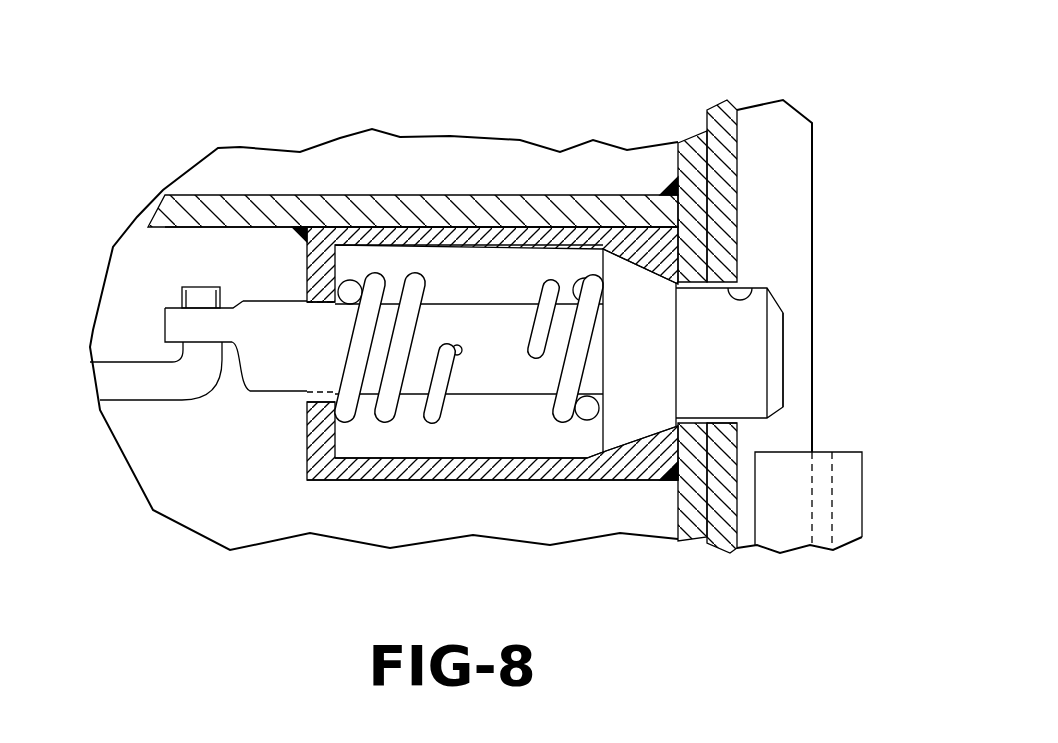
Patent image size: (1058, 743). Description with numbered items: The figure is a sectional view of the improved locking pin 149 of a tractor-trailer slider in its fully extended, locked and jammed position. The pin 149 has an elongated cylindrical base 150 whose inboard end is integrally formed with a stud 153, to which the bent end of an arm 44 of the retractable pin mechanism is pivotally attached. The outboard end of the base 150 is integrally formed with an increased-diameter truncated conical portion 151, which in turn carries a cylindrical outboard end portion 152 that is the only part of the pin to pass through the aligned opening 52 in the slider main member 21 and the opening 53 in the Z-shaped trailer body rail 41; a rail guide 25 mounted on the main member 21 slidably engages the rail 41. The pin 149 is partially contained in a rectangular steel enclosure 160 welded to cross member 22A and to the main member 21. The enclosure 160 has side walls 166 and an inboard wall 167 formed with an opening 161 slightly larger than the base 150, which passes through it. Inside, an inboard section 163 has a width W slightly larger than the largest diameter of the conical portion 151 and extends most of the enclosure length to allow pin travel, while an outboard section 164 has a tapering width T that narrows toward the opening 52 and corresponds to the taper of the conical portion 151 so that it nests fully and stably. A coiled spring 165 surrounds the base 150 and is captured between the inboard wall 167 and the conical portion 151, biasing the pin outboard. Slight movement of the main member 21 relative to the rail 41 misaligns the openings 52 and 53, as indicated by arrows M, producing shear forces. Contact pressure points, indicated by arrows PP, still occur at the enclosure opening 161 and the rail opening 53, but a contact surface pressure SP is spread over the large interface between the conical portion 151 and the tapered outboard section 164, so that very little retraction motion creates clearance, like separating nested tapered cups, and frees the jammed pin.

The cross member 22A is at (272, 182).
The main member 21 is at (687, 130).
The rail 41 is at (727, 128).
The truncated conical portion 151 is at (656, 278).
The opening 52 is at (708, 326).
The locking pin 149 is at (792, 365).
The opening 53 is at (724, 428).
The outboard end portion 152 is at (700, 381).
The rail guide 25 is at (847, 536).
The stud 153 is at (176, 321).
The base 150 is at (262, 308).
The arm 44 is at (170, 387).
The opening 161 is at (320, 397).
The enclosure 160 is at (330, 490).
The coiled spring 165 is at (388, 408).
The inboard section 163 is at (427, 455).
The outboard section 164 is at (593, 457).
The side wall 166 is at (473, 233).
The inboard wall 167 is at (328, 262).
The arrows M is at (722, 88).
The arrows PP is at (740, 300).
The arrow SP is at (619, 278).
The width W is at (483, 262).
The tapering width T is at (640, 280).